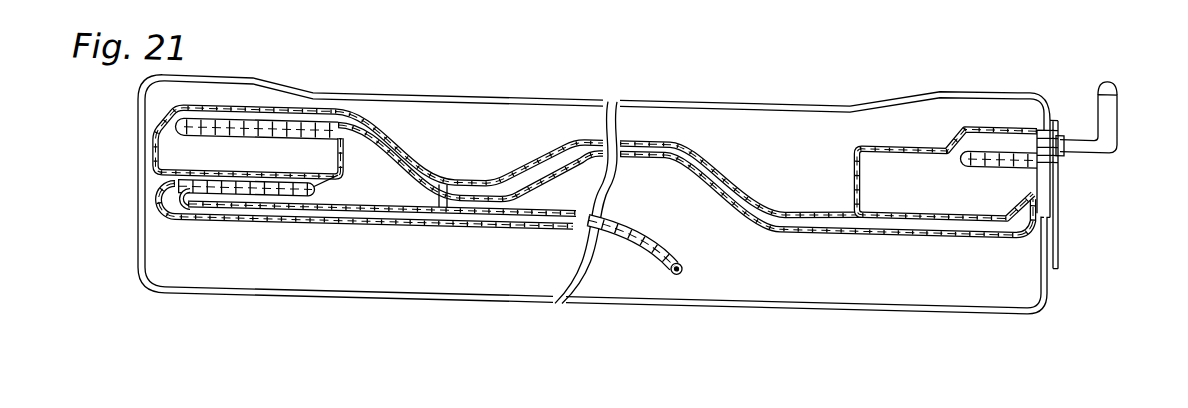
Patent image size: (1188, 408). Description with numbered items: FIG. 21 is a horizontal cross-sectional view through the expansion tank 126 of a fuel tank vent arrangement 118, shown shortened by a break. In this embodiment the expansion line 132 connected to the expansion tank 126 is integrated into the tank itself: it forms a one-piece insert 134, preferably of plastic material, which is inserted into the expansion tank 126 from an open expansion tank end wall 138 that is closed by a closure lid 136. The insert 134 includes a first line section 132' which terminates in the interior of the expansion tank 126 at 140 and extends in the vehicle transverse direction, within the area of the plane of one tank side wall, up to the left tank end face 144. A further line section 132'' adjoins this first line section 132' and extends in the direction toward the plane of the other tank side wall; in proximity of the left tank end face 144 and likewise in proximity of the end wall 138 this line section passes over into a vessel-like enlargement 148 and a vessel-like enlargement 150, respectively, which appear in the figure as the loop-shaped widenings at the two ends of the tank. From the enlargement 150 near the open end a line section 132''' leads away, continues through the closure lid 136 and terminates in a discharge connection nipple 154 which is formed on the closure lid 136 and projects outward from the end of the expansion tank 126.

The vent arrangement 118 is at (913, 70).
The expansion tank 126 is at (745, 88).
The expansion line 132 is at (469, 129).
The first line section 132' is at (366, 237).
The line section 132'' is at (605, 171).
The line section 132''' is at (999, 107).
The insert 134 is at (400, 136).
The closure lid 136 is at (1059, 158).
The expansion tank end wall 138 is at (1052, 261).
The termination point of first line section 140 is at (683, 251).
The left tank end face 144 is at (144, 184).
The vessel-like enlargement 148 is at (325, 133).
The vessel-like enlargement 150 is at (878, 131).
The discharge connection nipple 154 is at (1112, 85).